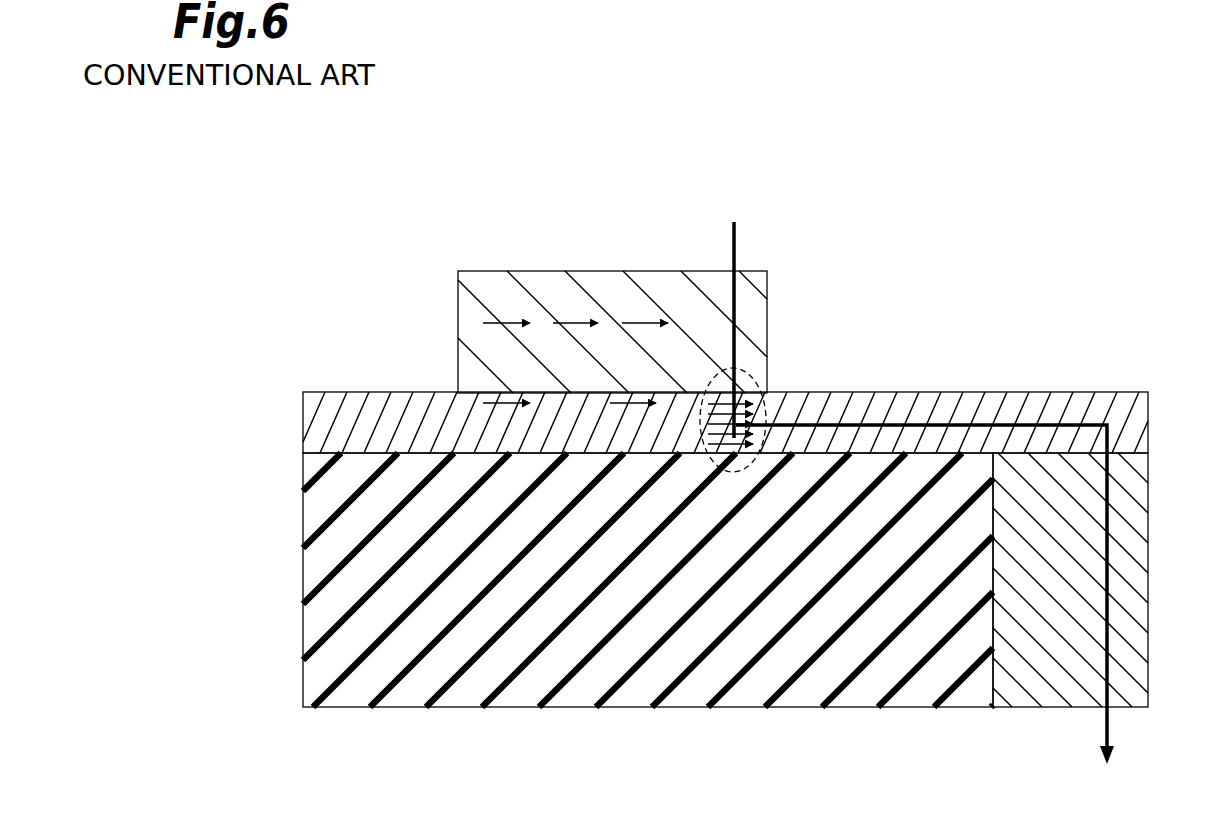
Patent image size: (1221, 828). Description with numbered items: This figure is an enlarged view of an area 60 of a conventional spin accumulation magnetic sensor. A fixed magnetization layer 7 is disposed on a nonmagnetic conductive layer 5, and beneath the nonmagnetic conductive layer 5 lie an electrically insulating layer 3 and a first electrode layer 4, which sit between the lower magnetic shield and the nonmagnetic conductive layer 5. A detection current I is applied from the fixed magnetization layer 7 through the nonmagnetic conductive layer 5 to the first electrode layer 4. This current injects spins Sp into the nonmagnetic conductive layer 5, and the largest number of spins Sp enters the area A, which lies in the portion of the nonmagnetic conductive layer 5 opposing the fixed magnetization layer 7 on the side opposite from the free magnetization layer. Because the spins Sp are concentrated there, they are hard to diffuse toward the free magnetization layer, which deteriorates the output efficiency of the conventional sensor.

The area 60 is at (405, 215).
The electrically insulating layer 3 is at (748, 685).
The first electrode layer 4 is at (1133, 568).
The nonmagnetic conductive layer 5 is at (1135, 427).
The fixed magnetization layer 7 is at (475, 335).
The detection current I is at (733, 241).
The area A is at (750, 375).
The spins Sp is at (752, 396).